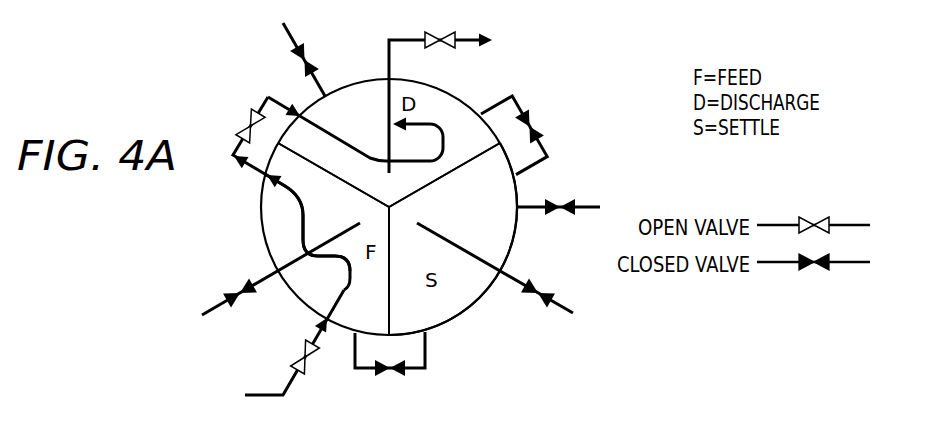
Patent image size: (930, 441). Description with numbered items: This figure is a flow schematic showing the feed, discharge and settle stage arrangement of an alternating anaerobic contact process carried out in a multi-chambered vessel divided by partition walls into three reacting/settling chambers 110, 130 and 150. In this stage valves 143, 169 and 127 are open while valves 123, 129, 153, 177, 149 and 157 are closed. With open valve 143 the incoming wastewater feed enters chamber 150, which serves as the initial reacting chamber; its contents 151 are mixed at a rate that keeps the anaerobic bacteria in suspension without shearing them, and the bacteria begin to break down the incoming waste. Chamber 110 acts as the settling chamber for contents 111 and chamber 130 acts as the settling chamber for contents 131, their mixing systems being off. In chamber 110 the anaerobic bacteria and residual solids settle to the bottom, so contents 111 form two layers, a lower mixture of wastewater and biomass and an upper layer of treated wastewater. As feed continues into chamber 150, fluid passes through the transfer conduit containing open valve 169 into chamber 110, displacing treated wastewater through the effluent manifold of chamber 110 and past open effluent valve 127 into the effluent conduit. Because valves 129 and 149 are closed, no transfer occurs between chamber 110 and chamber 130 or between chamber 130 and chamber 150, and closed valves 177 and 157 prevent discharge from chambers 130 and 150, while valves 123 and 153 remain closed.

The reacting/settling chamber 110 is at (360, 82).
The contents 111 is at (377, 123).
The contents 151 is at (353, 219).
The contents 131 is at (496, 219).
The reacting/settling chamber 130 is at (518, 230).
The effluent valve 127 is at (426, 34).
The valve 169 is at (242, 123).
The reacting/settling chamber 150 is at (259, 207).
The valve 143 is at (299, 354).
The valve 123 is at (295, 62).
The valve 129 is at (538, 121).
The valve 153 is at (562, 197).
The valve 157 is at (237, 286).
The effluent valve 177 is at (536, 302).
The valve 149 is at (391, 380).